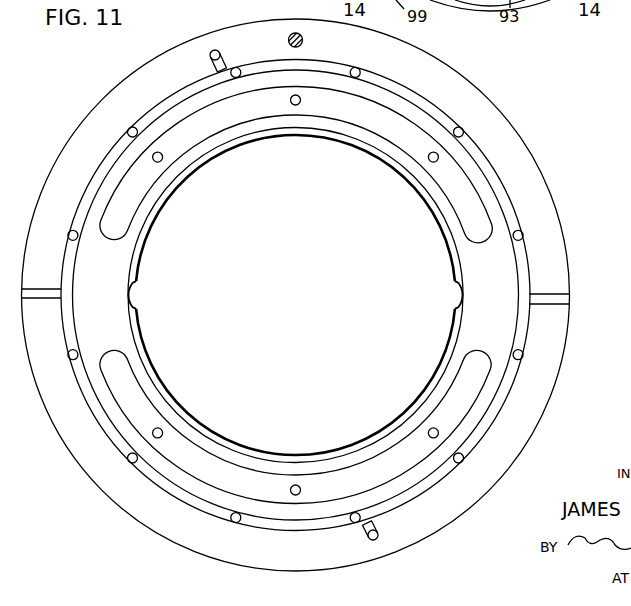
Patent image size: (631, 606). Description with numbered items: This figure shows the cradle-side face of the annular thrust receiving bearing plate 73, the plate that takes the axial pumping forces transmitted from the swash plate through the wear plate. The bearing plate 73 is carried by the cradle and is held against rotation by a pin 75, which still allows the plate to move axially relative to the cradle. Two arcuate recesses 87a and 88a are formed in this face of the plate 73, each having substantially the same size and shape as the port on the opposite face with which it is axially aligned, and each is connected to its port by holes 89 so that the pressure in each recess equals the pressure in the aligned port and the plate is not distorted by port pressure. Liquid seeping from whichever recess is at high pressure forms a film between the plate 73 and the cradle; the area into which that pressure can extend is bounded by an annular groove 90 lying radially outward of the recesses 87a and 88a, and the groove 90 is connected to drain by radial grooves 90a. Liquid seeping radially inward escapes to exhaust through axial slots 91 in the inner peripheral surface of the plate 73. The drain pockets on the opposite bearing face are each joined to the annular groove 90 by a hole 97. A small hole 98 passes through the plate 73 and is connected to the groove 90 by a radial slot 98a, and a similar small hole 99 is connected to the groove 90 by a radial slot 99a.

The bearing plate 73 is at (588, 242).
The pin 75 is at (303, 40).
The arcuate recess 87a is at (117, 228).
The arcuate recess 88a is at (118, 372).
The holes 89 is at (429, 438).
The annular groove 90 is at (526, 292).
The radial grooves 90a is at (574, 297).
The axial slots 91 is at (457, 296).
The hole 97 is at (70, 232).
The small hole 98 is at (215, 50).
The radial slot 98a is at (210, 68).
The small hole 99 is at (377, 539).
The radial slot 99a is at (380, 528).